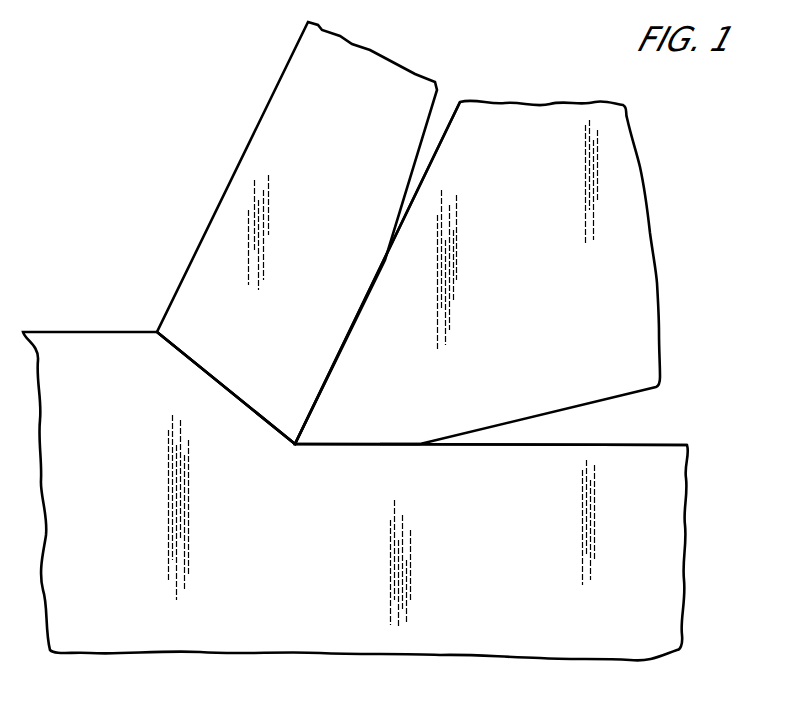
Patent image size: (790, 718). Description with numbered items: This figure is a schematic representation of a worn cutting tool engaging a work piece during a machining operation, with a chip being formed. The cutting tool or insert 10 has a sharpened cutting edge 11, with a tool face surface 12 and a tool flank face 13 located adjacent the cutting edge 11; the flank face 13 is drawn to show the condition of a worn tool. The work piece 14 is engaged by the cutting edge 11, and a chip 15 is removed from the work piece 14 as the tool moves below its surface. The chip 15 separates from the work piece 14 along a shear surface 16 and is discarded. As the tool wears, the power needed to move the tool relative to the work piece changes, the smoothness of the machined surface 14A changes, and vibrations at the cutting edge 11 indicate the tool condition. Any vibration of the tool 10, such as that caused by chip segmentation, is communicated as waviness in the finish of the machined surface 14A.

The cutting tool 10 is at (625, 167).
The cutting edge 11 is at (295, 444).
The tool face surface 12 is at (363, 298).
The tool flank face 13 is at (387, 444).
The work piece 14 is at (670, 510).
The machined surface 14A is at (648, 445).
The chip 15 is at (277, 140).
The shear surface 16 is at (202, 368).